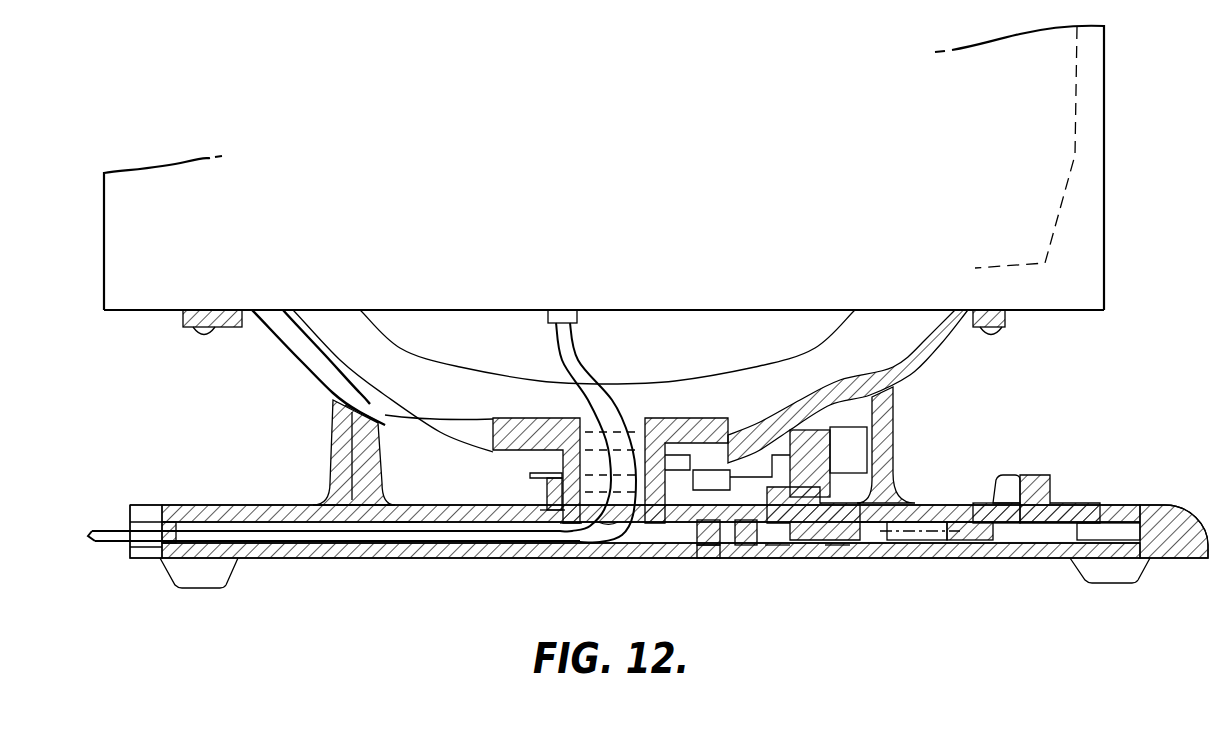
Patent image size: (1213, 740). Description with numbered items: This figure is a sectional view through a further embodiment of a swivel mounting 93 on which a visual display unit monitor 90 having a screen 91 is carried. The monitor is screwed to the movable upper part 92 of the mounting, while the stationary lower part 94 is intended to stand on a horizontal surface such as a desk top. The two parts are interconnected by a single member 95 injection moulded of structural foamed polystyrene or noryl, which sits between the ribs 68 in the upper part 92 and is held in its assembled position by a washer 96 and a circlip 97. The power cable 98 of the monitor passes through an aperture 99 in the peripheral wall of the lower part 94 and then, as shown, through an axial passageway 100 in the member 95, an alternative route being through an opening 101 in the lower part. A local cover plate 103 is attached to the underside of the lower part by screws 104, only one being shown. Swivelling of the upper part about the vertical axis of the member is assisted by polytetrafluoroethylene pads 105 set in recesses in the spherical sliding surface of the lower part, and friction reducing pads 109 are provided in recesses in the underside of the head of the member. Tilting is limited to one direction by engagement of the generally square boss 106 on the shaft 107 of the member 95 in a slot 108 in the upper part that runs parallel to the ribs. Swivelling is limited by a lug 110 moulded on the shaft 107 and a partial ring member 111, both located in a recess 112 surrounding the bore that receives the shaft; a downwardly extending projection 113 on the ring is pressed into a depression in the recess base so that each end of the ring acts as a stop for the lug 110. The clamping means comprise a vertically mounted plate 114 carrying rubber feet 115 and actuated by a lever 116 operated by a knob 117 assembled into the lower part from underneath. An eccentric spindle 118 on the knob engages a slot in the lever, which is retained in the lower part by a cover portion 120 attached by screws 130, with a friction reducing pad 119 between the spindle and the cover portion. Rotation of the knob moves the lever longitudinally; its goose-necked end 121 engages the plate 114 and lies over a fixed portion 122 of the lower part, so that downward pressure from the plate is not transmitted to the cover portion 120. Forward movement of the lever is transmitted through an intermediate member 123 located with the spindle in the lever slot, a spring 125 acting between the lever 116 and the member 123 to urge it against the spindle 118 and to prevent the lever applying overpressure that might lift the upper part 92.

The ribs 68 is at (386, 416).
The visual display unit monitor 90 is at (1106, 262).
The screen 91 is at (1075, 152).
The movable upper part 92 is at (283, 351).
The swivel mounting 93 is at (325, 404).
The stationary lower part 94 is at (262, 506).
The member 95 is at (556, 415).
The washer 96 is at (545, 512).
The circlip 97 is at (566, 525).
The power cable 98 is at (103, 531).
The aperture 99 is at (148, 506).
The axial passageway 100 is at (588, 402).
The opening 101 is at (397, 508).
The local cover plate 103 is at (246, 560).
The screws 104 is at (706, 557).
The polytetrafluoroethylene pads 105 is at (385, 455).
The boss 106 is at (654, 468).
The shaft 107 is at (613, 525).
The slot 108 is at (390, 412).
The friction reducing pads 109 is at (518, 416).
The lug 110 is at (678, 458).
The partial ring member 111 is at (530, 476).
The recess 112 is at (623, 440).
The downwardly extending projection 113 is at (545, 490).
The vertically mounted plate 114 is at (885, 428).
The rubber feet 115 is at (813, 440).
The lever 116 is at (835, 560).
The knob 117 is at (1062, 500).
The eccentric spindle 118 is at (1065, 566).
The friction reducing pad 119 is at (1010, 556).
The cover portion 120 is at (865, 557).
The end of the lever 121 is at (777, 560).
The fixed portion 122 is at (805, 557).
The intermediate member 123 is at (962, 558).
The spring 125 is at (914, 560).
The screws 130 is at (745, 558).